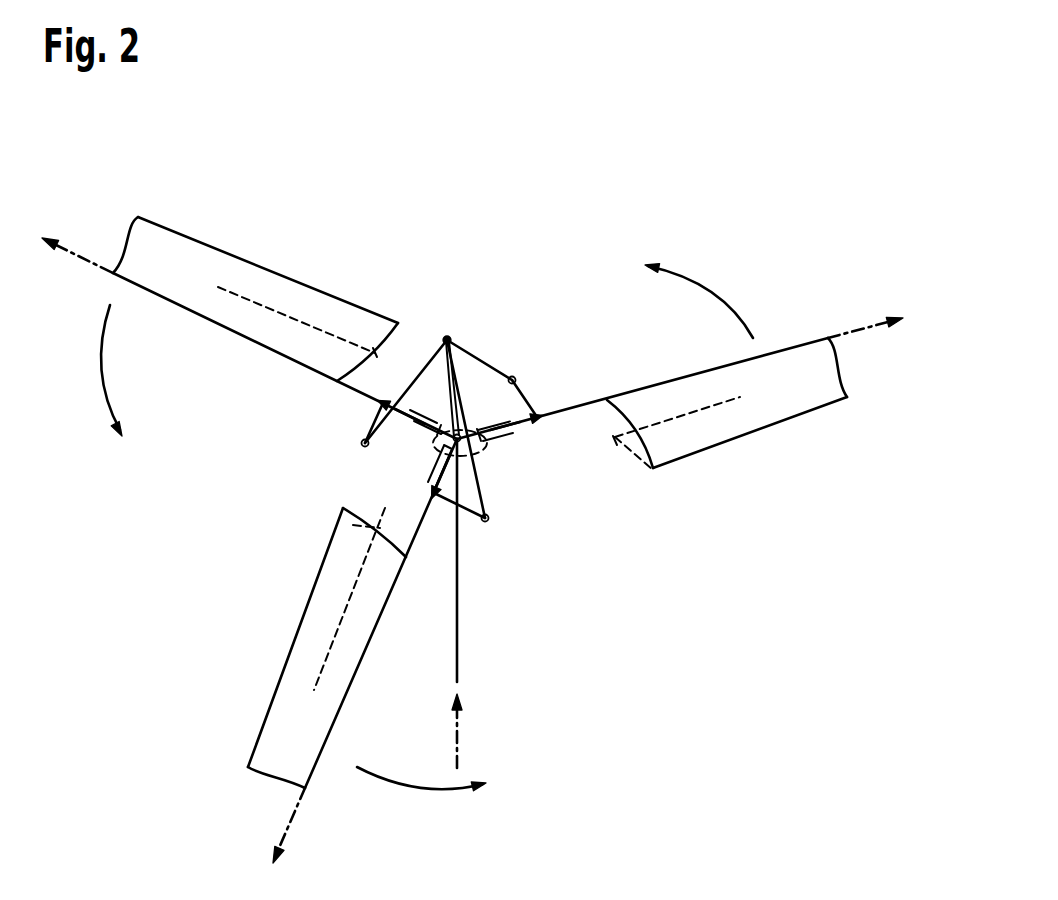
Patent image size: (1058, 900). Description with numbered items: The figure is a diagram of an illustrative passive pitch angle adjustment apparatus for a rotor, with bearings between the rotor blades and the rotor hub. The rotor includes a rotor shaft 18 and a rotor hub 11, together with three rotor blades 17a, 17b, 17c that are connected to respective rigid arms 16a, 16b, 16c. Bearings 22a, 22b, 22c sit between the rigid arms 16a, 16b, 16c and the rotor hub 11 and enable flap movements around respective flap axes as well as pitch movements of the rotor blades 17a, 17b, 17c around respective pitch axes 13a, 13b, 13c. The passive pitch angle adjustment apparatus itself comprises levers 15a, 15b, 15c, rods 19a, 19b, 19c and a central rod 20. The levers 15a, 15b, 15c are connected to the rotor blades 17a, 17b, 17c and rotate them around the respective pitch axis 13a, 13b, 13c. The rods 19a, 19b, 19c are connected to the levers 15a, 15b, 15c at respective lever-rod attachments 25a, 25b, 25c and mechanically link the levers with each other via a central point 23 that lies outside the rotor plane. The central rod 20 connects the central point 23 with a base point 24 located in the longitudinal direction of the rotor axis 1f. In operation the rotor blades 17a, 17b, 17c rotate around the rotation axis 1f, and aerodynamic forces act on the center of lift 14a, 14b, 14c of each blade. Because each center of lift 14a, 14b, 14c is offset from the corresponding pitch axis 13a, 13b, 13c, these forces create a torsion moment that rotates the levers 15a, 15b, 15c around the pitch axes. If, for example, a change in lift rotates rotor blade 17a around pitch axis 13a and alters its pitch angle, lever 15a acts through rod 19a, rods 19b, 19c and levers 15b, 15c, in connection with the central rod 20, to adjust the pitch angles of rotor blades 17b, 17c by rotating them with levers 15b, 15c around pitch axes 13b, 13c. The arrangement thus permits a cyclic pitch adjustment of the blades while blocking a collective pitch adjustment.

The rotor axis 1f is at (457, 755).
The rotor hub 11 is at (488, 456).
The pitch axis 13a is at (286, 835).
The pitch axis 13b is at (70, 251).
The pitch axis 13c is at (877, 325).
The center of lift 14a is at (327, 552).
The center of lift 14b is at (403, 327).
The center of lift 14c is at (653, 470).
The lever 15a is at (471, 513).
The lever 15b is at (368, 437).
The lever 15c is at (527, 401).
The rigid arm 16a is at (440, 502).
The rigid arm 16b is at (377, 407).
The rigid arm 16c is at (580, 403).
The rotor blade 17a is at (303, 640).
The rotor blade 17b is at (210, 260).
The rotor blade 17c is at (760, 410).
The rotor shaft 18 is at (468, 634).
The rod 19a is at (481, 478).
The rod 19b is at (424, 400).
The rod 19c is at (476, 410).
The central rod 20 is at (415, 378).
The bearing 22a is at (440, 475).
The bearing 22b is at (408, 430).
The bearing 22c is at (500, 437).
The central point 23 is at (447, 340).
The base point 24 is at (448, 392).
The lever-rod attachment 25a is at (489, 520).
The lever-rod attachment 25b is at (364, 447).
The lever-rod attachment 25c is at (515, 378).